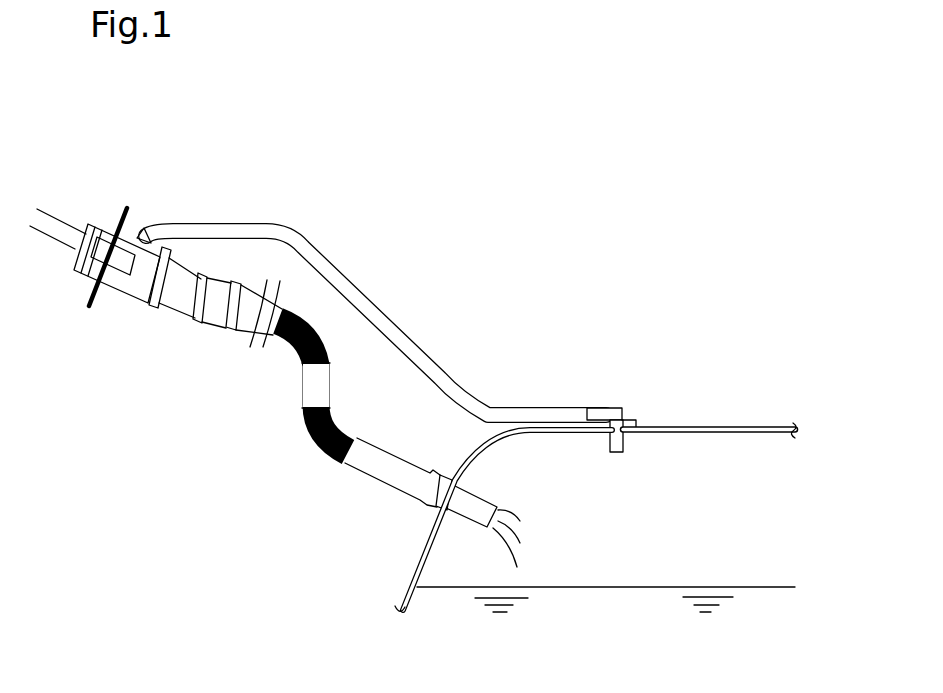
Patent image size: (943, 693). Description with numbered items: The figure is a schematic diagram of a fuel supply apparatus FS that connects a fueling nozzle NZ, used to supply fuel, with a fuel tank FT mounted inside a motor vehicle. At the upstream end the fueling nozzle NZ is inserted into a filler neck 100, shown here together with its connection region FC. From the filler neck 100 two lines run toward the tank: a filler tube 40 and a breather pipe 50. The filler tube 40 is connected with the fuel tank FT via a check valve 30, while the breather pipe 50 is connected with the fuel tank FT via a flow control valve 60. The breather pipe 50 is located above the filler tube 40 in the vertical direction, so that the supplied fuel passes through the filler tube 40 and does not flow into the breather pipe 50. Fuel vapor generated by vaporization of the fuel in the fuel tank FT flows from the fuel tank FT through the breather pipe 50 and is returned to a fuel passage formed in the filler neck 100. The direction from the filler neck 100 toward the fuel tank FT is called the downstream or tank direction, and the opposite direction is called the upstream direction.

The fueling nozzle NZ is at (68, 222).
The fuel supply apparatus FS is at (413, 247).
The fuel connector FC is at (67, 258).
The filler neck 100 is at (143, 297).
The breather pipe 50 is at (415, 322).
The filler tube 40 is at (302, 387).
The check valve 30 is at (493, 524).
The flow control valve 60 is at (606, 407).
The fuel tank FT is at (748, 427).